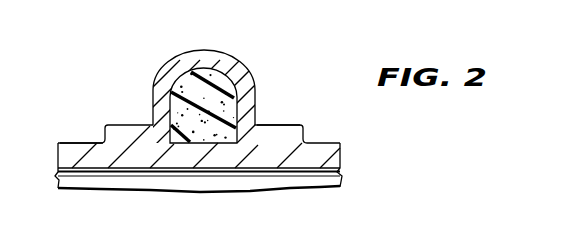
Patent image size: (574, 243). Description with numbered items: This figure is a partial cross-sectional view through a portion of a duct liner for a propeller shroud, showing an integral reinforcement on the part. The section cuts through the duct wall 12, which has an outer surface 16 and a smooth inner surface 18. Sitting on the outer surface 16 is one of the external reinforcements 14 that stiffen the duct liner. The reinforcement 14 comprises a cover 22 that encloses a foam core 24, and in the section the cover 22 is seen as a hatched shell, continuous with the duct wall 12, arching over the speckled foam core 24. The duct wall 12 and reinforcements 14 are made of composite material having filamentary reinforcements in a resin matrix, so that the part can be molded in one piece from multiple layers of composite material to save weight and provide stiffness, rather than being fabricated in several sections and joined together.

The duct wall 12 is at (72, 139).
The external reinforcements 14 is at (226, 22).
The outer surface 16 is at (92, 143).
The smooth inner surface 18 is at (82, 172).
The cover 22 is at (285, 125).
The foam core 24 is at (236, 80).